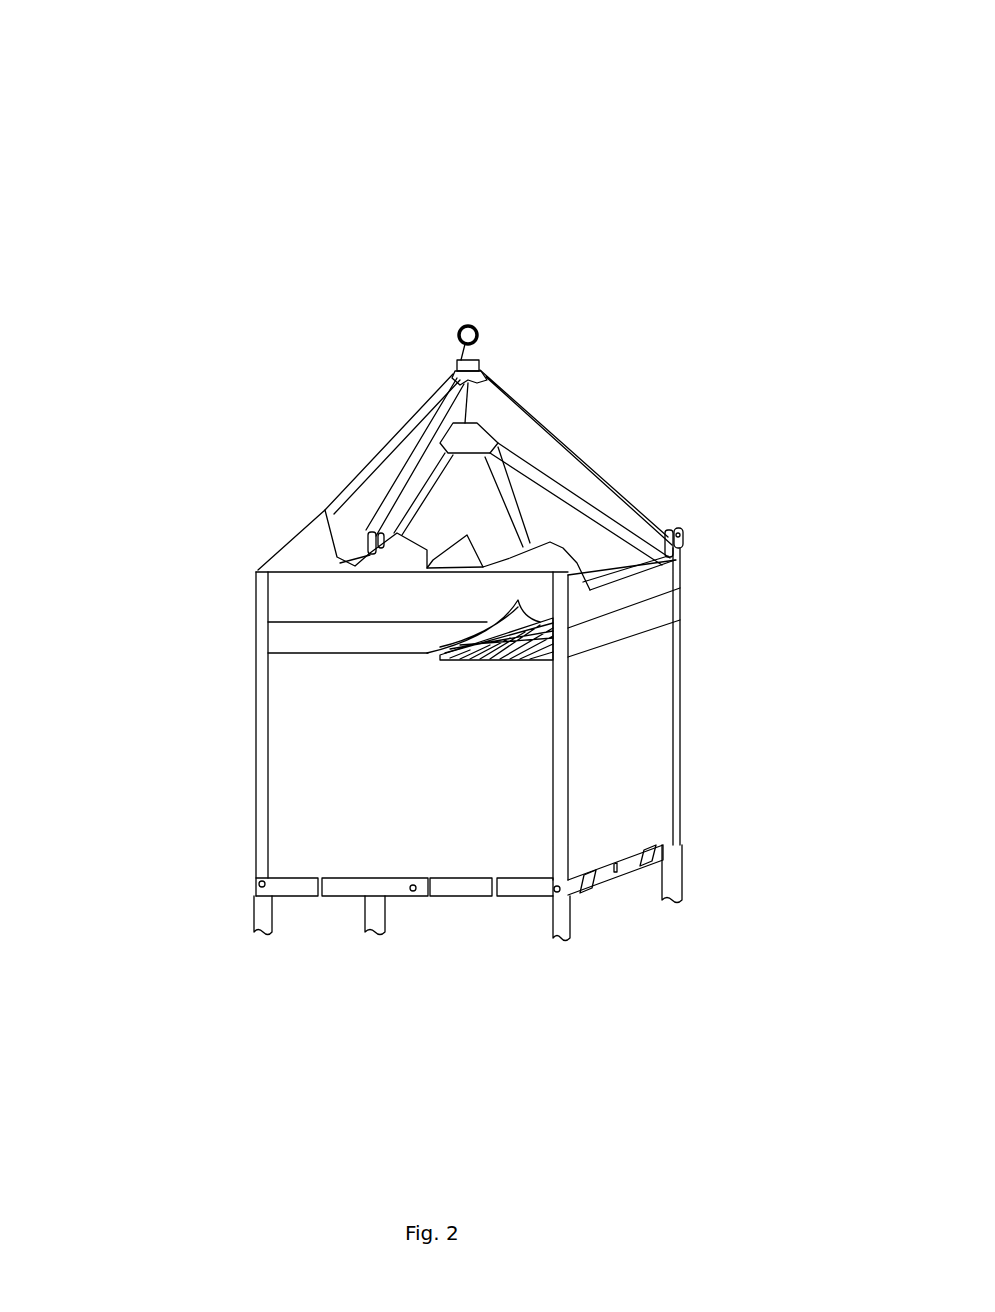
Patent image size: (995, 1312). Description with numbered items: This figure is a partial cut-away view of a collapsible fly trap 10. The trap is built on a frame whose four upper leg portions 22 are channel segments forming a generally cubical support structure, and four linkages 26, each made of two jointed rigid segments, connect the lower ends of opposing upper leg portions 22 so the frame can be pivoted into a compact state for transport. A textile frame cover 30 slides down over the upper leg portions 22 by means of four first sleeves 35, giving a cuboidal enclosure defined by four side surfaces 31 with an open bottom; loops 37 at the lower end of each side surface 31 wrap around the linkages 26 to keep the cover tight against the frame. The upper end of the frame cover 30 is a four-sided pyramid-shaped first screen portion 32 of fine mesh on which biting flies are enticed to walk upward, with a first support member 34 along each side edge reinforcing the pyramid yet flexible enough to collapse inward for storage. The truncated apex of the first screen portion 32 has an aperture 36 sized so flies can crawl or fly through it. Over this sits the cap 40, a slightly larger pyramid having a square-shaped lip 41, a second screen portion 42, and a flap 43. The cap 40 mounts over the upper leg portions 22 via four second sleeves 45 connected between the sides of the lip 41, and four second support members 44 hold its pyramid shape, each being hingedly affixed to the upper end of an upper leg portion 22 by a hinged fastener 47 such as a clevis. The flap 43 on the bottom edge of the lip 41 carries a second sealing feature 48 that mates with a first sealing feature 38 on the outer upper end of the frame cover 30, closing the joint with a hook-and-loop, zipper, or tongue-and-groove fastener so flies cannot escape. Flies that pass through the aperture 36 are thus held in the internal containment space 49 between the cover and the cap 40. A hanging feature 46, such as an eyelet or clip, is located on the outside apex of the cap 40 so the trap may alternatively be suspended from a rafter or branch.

The collapsible fly trap 10 is at (100, 105).
The upper leg portion 22 is at (250, 898).
The linkage 26 is at (378, 890).
The frame cover 30 is at (145, 775).
The side surface 31 is at (290, 788).
The first screen portion 32 is at (490, 430).
The first support member 34 is at (437, 483).
The first sleeve 35 is at (258, 711).
The aperture 36 is at (480, 423).
The loop 37 is at (300, 880).
The first sealing feature 38 is at (522, 657).
The cap 40 is at (326, 484).
The lip 41 is at (280, 612).
The second screen portion 42 is at (480, 370).
The flap 43 is at (281, 637).
The second support member 44 is at (407, 427).
The second sleeve 45 is at (680, 562).
The hanging feature 46 is at (474, 360).
The hinged fastener 47 is at (680, 543).
The second sealing feature 48 is at (453, 655).
The internal containment space 49 is at (522, 440).